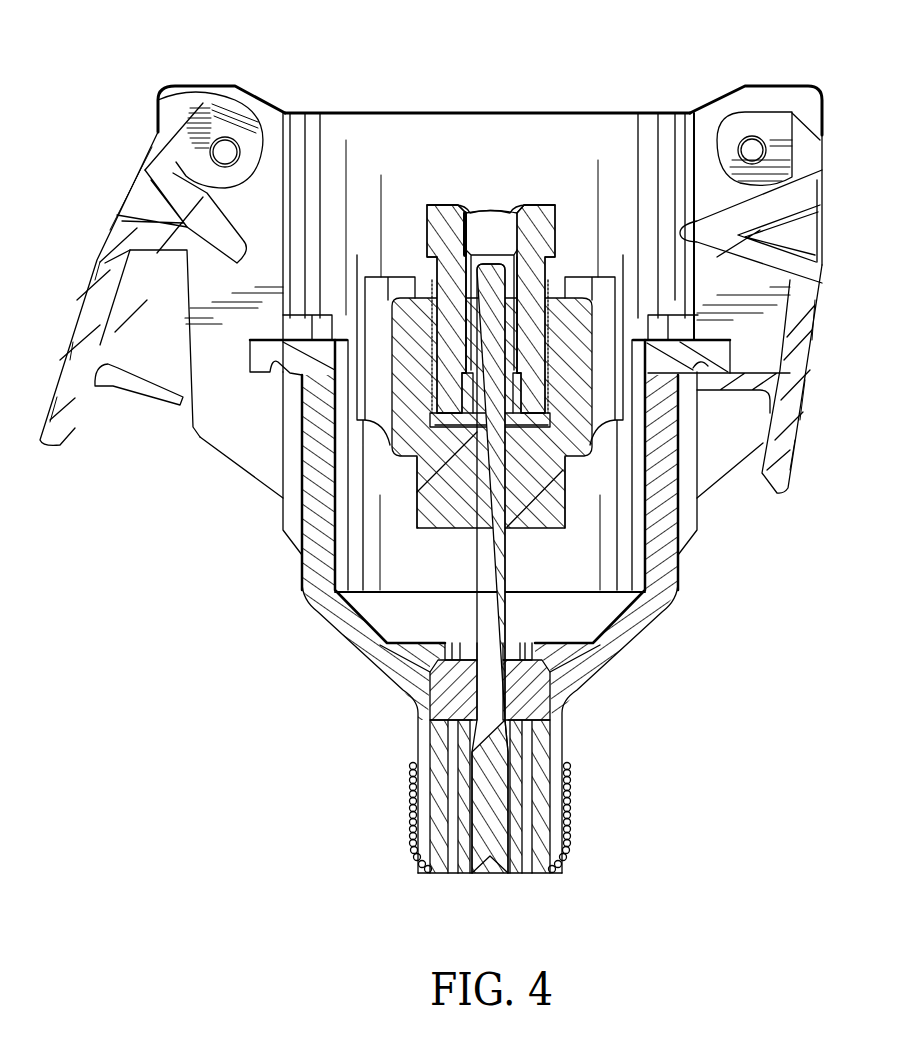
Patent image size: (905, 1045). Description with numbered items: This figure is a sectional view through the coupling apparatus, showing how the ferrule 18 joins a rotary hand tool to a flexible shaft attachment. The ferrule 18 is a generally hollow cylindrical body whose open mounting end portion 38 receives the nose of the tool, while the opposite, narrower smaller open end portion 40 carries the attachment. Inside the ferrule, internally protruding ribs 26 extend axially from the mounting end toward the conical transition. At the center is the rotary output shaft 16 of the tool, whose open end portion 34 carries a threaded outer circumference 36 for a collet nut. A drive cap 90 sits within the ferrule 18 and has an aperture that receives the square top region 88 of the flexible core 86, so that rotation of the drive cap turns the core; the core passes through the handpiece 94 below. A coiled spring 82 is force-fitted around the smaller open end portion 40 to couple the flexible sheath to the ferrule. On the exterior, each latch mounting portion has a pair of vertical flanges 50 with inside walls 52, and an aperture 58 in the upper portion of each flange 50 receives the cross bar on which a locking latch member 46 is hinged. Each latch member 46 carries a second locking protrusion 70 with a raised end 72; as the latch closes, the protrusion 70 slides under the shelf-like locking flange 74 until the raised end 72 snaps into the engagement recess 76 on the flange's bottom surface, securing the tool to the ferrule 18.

The rotary output shaft 16 is at (448, 225).
The ferrule 18 is at (93, 147).
The internally protruding ribs 26 is at (555, 462).
The open end portion 34 is at (530, 400).
The threaded outer circumference 36 is at (548, 385).
The open mounting end portion 38 is at (622, 113).
The smaller open end portion 40 is at (568, 738).
The locking latch member 46 is at (97, 258).
The vertical flange 50 is at (193, 85).
The inside wall 52 is at (220, 420).
The aperture 58 is at (750, 150).
The second locking protrusion 70 is at (130, 378).
The raised end 72 is at (165, 357).
The locking flange 74 is at (250, 343).
The engagement recess 76 is at (273, 365).
The coiled spring 82 is at (568, 815).
The flexible core 86 is at (490, 783).
The top region 88 is at (493, 280).
The drive cap 90 is at (420, 545).
The handpiece 94 is at (603, 308).